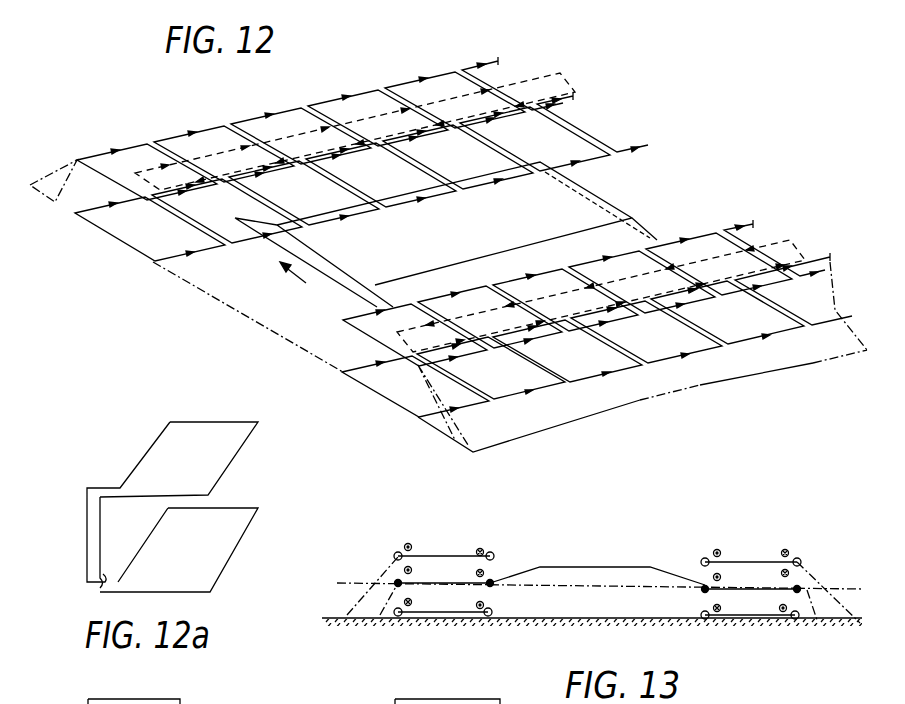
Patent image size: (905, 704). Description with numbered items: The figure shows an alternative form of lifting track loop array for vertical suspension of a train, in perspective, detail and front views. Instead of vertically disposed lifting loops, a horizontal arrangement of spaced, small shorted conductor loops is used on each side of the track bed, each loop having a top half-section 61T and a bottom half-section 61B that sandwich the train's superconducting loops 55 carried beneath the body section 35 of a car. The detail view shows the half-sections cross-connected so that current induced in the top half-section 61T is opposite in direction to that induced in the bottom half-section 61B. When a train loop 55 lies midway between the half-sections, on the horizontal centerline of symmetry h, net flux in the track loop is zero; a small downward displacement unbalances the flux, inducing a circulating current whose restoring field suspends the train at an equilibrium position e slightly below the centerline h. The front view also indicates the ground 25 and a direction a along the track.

In FIG. 12, the top half-section 61T is at (293, 103).
In FIG. 12A, the top half-section 61T is at (245, 448).
In FIG. 13, the top half-section 61T is at (473, 540).
In FIG. 12, the bottom half-section 61B is at (115, 238).
In FIG. 12A, the bottom half-section 61B is at (236, 557).
In FIG. 13, the bottom half-section 61B is at (443, 618).
In FIG. 12, the superconducting loops 55 is at (210, 160).
In FIG. 13, the superconducting loops 55 is at (455, 576).
In FIG. 12, the body section 35 is at (468, 240).
In FIG. 13, the body section 35 is at (600, 567).
In FIG. 13, the ground 25 is at (587, 649).
In FIG. 12, the direction of travel a is at (294, 283).
In FIG. 13, the horizontal centerline of symmetry h is at (352, 574).
In FIG. 13, the equilibrium position e is at (330, 601).